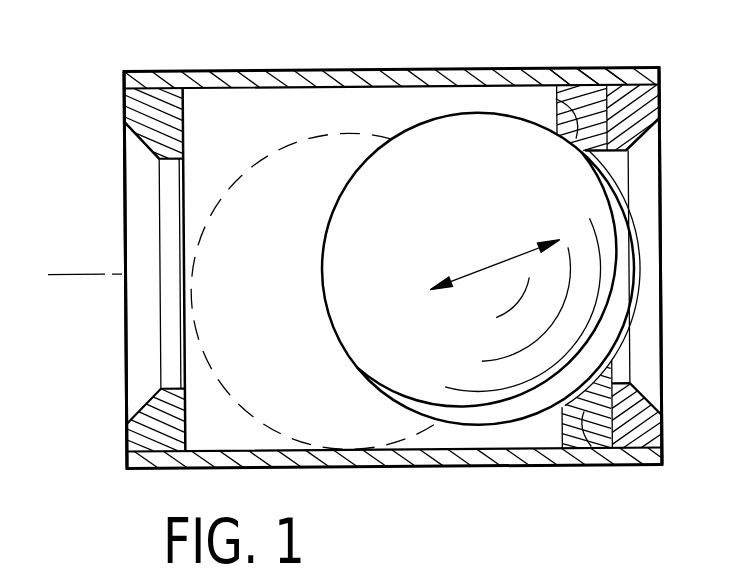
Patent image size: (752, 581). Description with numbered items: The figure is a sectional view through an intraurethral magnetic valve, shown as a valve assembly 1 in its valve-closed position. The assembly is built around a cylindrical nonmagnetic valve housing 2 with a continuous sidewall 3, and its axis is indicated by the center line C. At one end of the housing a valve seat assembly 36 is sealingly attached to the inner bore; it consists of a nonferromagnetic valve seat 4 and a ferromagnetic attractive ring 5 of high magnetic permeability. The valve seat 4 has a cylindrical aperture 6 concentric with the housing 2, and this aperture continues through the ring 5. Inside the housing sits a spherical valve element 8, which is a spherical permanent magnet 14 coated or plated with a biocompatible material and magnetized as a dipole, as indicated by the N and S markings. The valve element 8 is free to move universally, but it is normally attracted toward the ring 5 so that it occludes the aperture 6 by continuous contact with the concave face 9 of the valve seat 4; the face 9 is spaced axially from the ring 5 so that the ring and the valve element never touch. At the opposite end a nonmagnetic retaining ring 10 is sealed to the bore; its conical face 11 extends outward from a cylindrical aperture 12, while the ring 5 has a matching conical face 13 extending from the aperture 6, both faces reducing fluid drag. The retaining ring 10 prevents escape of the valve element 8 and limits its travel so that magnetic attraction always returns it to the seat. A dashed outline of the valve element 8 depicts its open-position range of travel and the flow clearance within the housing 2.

The valve assembly 1 is at (374, 46).
The valve housing 2 is at (263, 70).
The sidewall 3 is at (312, 80).
The valve seat 4 is at (588, 84).
The attractive ring 5 is at (659, 95).
The cylindrical aperture 6 is at (600, 160).
The valve element 8 is at (403, 123).
The face 9 is at (558, 97).
The retaining ring 10 is at (143, 107).
The conical face 11 is at (150, 150).
The cylindrical aperture 12 is at (165, 243).
The conical face 13 is at (658, 396).
The spherical permanent magnet 14 is at (442, 355).
The valve seat assembly 36 is at (612, 450).
The center line C is at (72, 277).